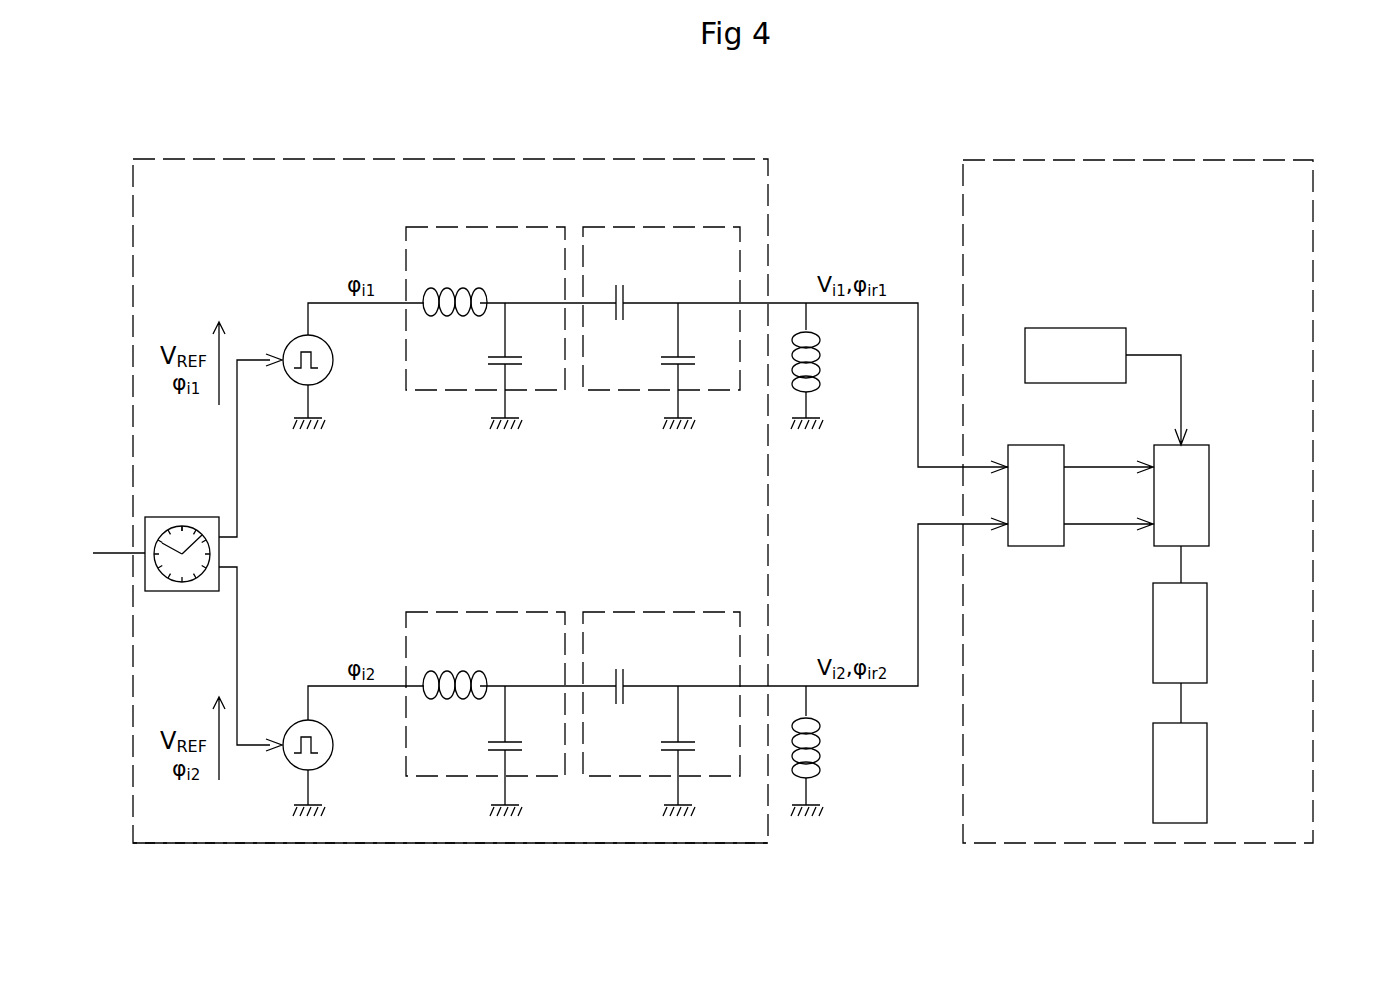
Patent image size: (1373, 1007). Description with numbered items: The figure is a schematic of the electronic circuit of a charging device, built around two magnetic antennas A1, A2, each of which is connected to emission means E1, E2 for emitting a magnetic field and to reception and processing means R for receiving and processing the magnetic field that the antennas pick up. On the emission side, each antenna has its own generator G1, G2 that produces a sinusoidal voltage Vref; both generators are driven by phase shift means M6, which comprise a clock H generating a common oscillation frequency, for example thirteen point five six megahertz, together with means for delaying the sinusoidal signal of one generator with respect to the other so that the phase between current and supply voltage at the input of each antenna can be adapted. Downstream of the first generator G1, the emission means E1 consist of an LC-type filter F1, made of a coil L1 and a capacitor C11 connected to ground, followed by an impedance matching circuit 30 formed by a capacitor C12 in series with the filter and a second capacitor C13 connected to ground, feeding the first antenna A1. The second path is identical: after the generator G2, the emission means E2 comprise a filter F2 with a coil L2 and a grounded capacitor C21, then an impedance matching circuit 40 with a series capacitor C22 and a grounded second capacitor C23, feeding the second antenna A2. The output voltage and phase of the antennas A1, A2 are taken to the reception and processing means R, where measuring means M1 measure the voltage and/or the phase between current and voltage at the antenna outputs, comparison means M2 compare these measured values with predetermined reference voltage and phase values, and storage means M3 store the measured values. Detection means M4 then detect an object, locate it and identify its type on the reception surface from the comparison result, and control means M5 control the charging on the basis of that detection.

The emission means E1 is at (768, 159).
The emission means E2 is at (768, 843).
The reception and processing means R is at (1313, 160).
The phase shift means M6 is at (156, 554).
The clock H is at (191, 519).
The generator G1 is at (350, 366).
The generator G2 is at (350, 751).
The filter F1 is at (490, 227).
The filter F2 is at (490, 612).
The coil L1 is at (461, 288).
The coil L2 is at (461, 671).
The capacitor C11 is at (478, 366).
The capacitor C12 is at (638, 287).
The second capacitor C13 is at (650, 366).
The capacitor C21 is at (478, 751).
The capacitor C22 is at (638, 671).
The second capacitor C23 is at (650, 751).
The impedance matching circuit 30 is at (667, 227).
The impedance matching circuit 40 is at (667, 612).
The magnetic antenna A1 is at (824, 366).
The magnetic antenna A2 is at (824, 751).
The measuring means M1 is at (1064, 505).
The comparison means M2 is at (1209, 505).
The storage means M3 is at (1077, 328).
The detection means M4 is at (1207, 643).
The control means M5 is at (1207, 782).